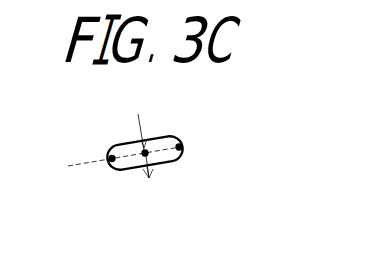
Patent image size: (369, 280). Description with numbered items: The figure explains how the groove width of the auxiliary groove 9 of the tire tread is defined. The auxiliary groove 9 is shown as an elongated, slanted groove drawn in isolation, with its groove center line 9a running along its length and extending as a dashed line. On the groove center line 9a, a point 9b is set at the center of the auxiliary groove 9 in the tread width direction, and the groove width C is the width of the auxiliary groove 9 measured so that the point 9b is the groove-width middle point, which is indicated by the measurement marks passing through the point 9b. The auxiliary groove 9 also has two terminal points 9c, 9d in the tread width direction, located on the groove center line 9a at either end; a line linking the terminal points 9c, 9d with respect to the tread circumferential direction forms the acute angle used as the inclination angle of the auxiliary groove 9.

The auxiliary groove 9 is at (165, 138).
The groove center line 9a is at (162, 152).
The point 9b is at (140, 160).
The terminal point 9c is at (112, 158).
The terminal point 9d is at (181, 148).
The groove width C is at (143, 135).